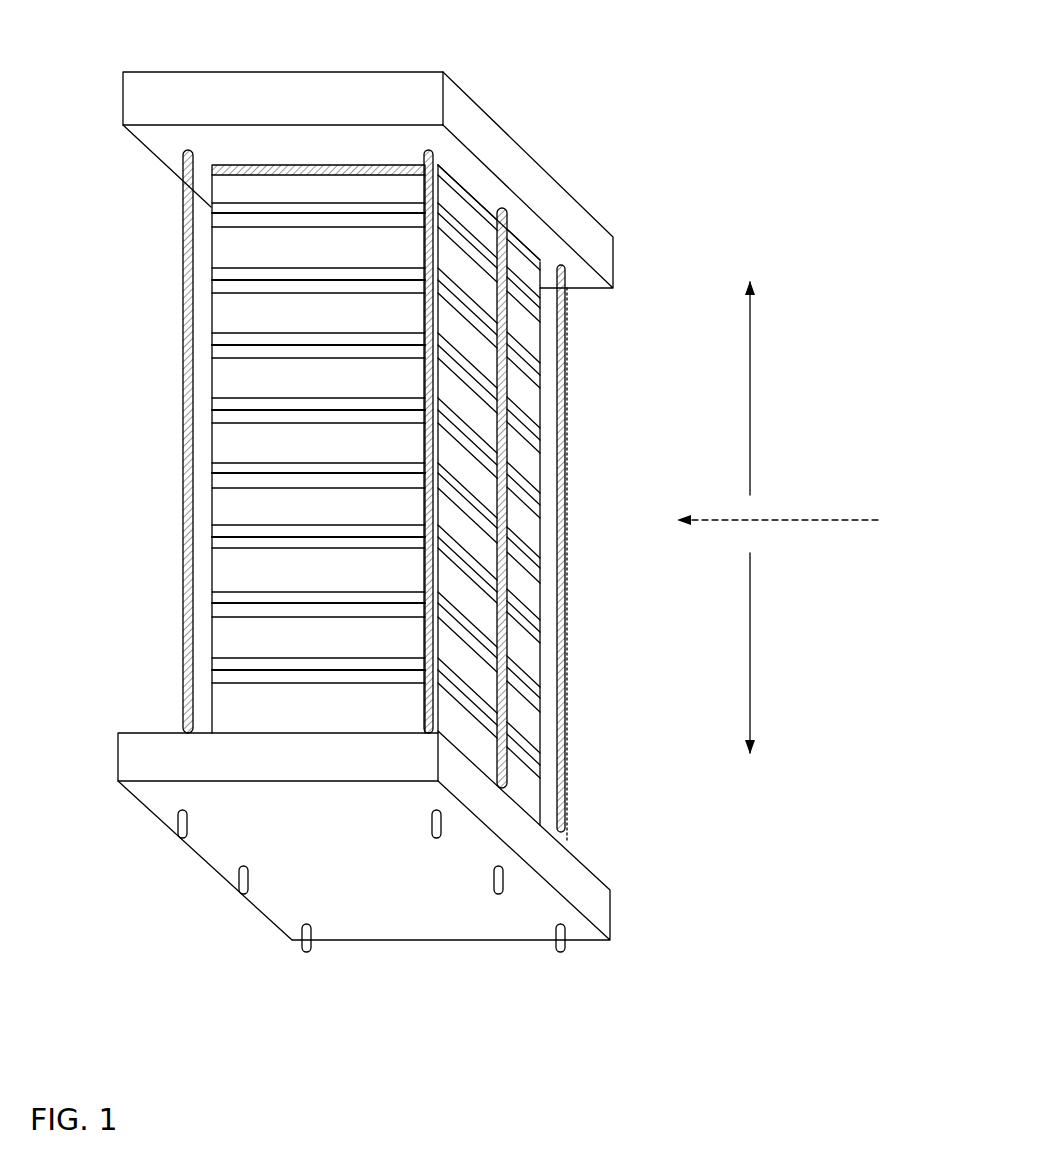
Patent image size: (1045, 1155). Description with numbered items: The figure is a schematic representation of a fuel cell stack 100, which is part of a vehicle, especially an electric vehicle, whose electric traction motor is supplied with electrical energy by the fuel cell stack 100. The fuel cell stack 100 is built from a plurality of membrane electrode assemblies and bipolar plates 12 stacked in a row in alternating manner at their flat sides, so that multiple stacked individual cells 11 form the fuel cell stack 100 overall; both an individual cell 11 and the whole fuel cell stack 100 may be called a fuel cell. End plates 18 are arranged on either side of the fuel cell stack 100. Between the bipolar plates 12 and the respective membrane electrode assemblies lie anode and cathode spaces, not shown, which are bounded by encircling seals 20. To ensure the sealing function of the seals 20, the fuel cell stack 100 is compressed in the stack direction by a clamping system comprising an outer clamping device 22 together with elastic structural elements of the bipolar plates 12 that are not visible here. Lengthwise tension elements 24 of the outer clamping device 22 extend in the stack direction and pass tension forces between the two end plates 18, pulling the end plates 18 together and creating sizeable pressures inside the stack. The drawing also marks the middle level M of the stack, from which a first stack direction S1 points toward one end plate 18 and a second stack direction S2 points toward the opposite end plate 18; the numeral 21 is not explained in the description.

The fuel cell stack 100 is at (417, 477).
The individual cell 11 is at (200, 411).
The bipolar plate 12 is at (523, 327).
The end plate 18 is at (547, 193).
The encircling seal 20 is at (543, 497).
The support post 21 is at (505, 250).
The outer clamping device 22 is at (562, 648).
The tension element 24 is at (568, 680).
The first stack direction S1 is at (784, 388).
The second stack direction S2 is at (793, 653).
The middle level M is at (812, 518).